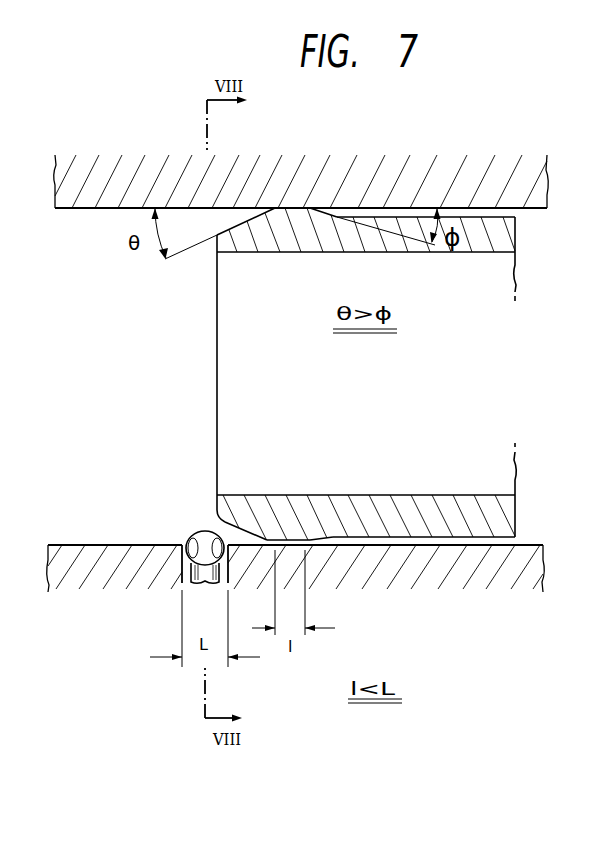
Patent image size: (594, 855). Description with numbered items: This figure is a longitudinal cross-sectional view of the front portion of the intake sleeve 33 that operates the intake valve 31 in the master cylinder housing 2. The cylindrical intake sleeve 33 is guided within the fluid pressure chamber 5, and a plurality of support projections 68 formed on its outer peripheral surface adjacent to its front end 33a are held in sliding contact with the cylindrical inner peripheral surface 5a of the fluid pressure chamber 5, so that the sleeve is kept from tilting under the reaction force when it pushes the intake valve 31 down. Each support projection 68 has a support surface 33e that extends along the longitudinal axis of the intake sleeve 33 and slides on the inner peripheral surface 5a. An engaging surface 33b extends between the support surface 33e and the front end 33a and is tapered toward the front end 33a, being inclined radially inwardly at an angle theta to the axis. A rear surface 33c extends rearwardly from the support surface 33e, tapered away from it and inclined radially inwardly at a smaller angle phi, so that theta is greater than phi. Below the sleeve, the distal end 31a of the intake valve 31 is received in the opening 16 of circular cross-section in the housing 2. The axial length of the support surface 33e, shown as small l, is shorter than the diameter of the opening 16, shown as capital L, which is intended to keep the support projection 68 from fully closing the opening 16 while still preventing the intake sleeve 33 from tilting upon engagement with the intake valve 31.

The master cylinder housing 2 is at (296, 550).
The fluid pressure chamber 5 is at (301, 269).
The inner peripheral surface 5a is at (94, 209).
The opening 16 is at (182, 572).
The intake valve 31 is at (171, 569).
The distal end 31a is at (188, 536).
The intake sleeve 33 is at (332, 364).
The front end 33a is at (220, 520).
The engaging surface 33b is at (242, 223).
The rear surface 33c is at (336, 217).
The support surface 33e is at (309, 209).
The support projection 68 is at (291, 213).